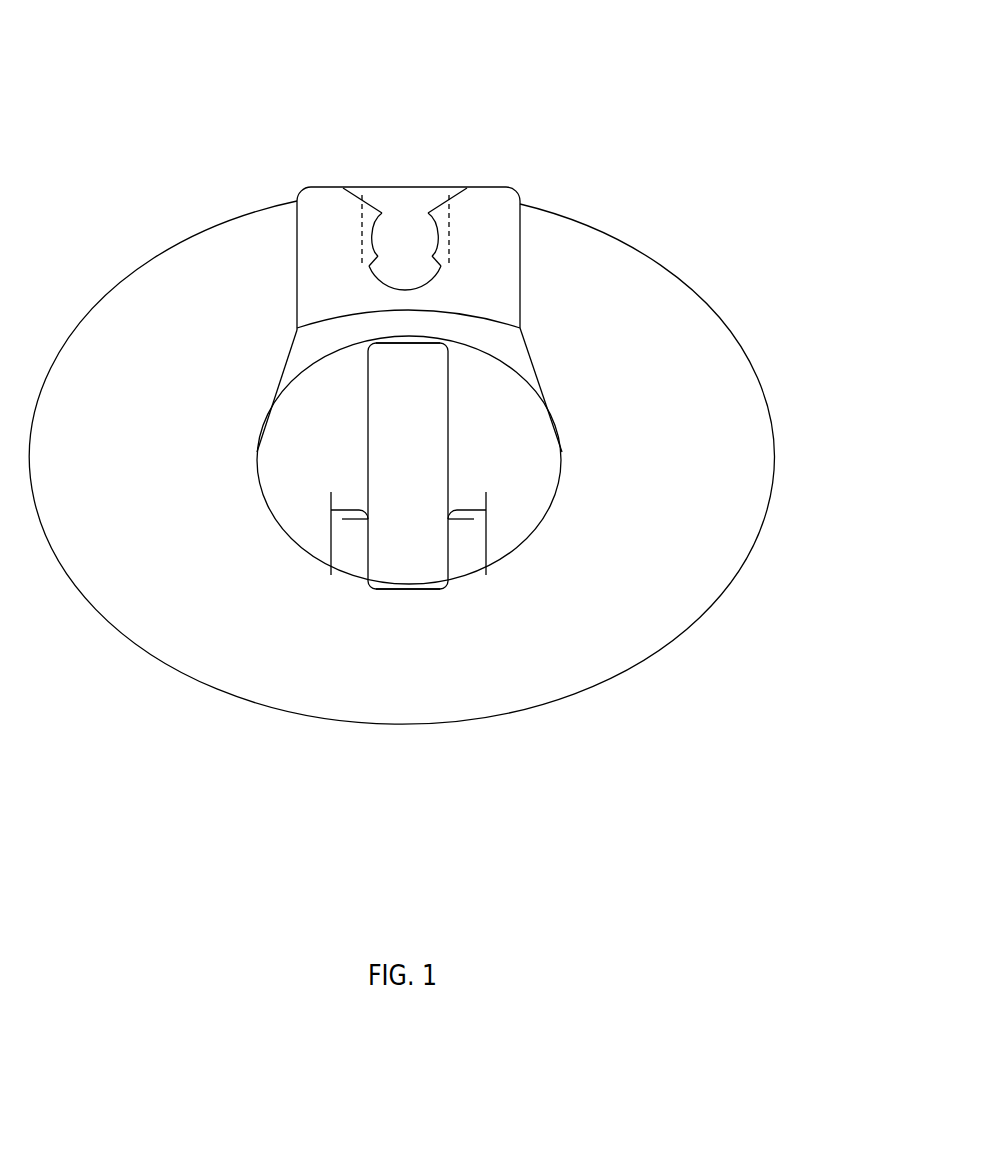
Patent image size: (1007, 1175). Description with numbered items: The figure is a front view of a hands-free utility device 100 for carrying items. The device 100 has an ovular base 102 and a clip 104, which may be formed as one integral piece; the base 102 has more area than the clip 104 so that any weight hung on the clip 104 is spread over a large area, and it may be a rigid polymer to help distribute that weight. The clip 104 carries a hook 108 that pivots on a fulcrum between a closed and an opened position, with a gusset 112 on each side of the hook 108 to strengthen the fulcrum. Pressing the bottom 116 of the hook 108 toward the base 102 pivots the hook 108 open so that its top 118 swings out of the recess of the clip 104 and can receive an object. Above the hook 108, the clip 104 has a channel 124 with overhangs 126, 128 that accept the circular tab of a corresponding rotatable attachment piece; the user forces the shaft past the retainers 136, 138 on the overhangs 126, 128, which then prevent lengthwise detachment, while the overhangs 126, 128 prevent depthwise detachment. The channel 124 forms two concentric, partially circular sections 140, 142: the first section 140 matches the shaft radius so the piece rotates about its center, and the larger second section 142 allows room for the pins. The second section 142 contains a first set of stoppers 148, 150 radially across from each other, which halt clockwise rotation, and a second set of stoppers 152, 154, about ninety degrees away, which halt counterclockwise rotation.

The utility device 100 is at (593, 66).
The base 102 is at (109, 619).
The clip 104 is at (308, 198).
The hook 108 is at (408, 466).
The gusset 112 is at (344, 576).
The bottom of the hook 116 is at (424, 574).
The top of the hook 118 is at (424, 389).
The channel 124 is at (413, 200).
The overhang 126 is at (449, 230).
The overhang 128 is at (361, 230).
The retainer 136 is at (448, 210).
The retainer 138 is at (361, 208).
The first section 140 is at (421, 249).
The second section 142 is at (421, 282).
The first stopper 148 is at (367, 270).
The second stopper 150 is at (438, 205).
The stopper of the second set 152 is at (444, 270).
The stopper of the second set 154 is at (369, 203).